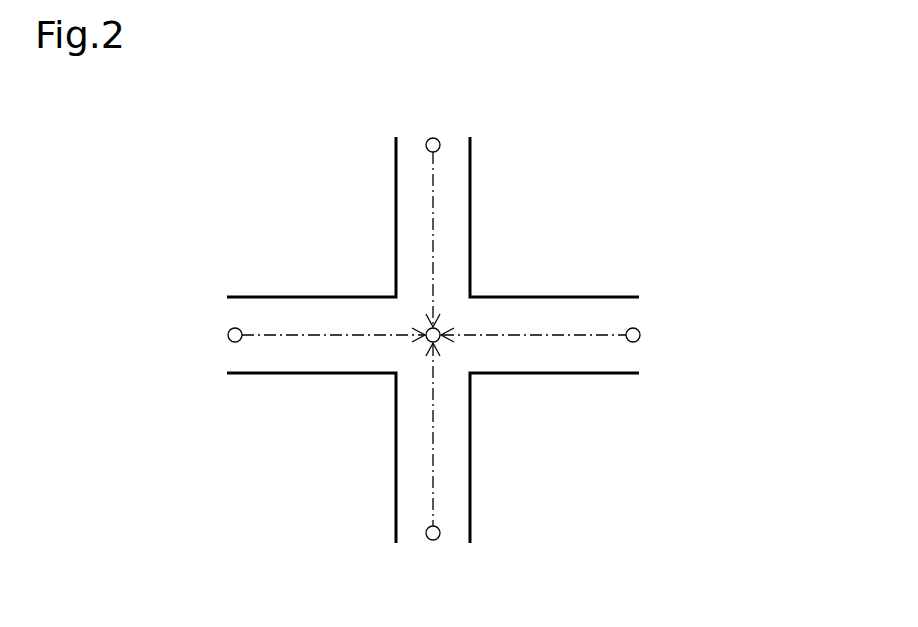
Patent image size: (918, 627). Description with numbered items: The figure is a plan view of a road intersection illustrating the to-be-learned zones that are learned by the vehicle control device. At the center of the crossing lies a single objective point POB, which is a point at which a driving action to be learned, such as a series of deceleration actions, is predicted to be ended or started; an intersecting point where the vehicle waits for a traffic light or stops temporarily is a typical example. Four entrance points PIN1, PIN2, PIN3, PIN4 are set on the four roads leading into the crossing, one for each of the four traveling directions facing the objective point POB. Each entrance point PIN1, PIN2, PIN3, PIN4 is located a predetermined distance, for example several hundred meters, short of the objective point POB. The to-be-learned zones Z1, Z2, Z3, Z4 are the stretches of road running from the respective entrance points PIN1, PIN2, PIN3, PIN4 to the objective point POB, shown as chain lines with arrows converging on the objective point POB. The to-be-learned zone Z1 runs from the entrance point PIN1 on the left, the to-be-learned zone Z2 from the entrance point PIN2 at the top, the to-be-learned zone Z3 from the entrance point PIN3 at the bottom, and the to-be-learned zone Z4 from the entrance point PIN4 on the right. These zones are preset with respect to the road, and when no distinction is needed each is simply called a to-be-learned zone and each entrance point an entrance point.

The entrance point PIN1 is at (228, 335).
The entrance point PIN2 is at (432, 137).
The entrance point PIN3 is at (433, 541).
The entrance point PIN4 is at (640, 335).
The objective point POB is at (441, 328).
The to-be-learned zone Z1 is at (323, 330).
The to-be-learned zone Z2 is at (433, 215).
The to-be-learned zone Z3 is at (433, 458).
The to-be-learned zone Z4 is at (513, 340).